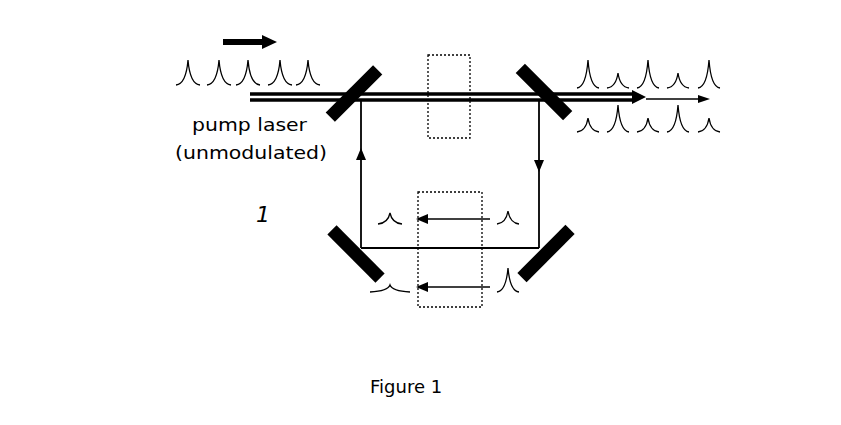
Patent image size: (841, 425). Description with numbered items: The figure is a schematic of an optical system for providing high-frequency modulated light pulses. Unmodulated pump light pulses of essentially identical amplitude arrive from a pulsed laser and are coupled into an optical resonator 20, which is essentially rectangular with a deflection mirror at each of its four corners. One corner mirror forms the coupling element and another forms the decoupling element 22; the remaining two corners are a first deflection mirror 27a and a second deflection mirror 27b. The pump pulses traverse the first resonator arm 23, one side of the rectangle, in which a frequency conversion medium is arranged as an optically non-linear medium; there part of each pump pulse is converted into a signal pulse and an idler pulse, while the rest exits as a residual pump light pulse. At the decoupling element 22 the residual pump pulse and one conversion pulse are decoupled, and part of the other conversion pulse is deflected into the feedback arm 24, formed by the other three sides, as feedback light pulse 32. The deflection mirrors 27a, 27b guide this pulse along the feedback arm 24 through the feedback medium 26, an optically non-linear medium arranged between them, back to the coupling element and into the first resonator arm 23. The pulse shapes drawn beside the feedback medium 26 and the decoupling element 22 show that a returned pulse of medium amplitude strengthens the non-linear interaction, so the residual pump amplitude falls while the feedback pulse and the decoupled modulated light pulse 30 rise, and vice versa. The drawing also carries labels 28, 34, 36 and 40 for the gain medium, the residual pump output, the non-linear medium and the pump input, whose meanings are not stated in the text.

The optical resonator 20 is at (378, 173).
The decoupling element 22 is at (542, 77).
The first resonator arm 23 is at (408, 92).
The feedback arm 24 is at (540, 209).
The feedback medium 26 is at (363, 79).
The first deflection mirror 27a is at (351, 264).
The second deflection mirror 27b is at (561, 243).
The gain medium 28 is at (466, 82).
The modulated light pulse 30 is at (722, 121).
The feedback light pulse 32 is at (540, 139).
The residual pump (modulated) 34 is at (717, 72).
The nonlinear medium 36 is at (459, 201).
The pump laser (unmodulated) 40 is at (291, 64).